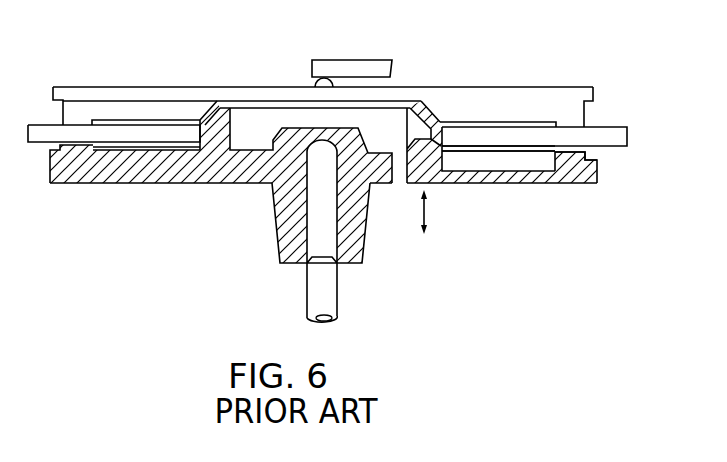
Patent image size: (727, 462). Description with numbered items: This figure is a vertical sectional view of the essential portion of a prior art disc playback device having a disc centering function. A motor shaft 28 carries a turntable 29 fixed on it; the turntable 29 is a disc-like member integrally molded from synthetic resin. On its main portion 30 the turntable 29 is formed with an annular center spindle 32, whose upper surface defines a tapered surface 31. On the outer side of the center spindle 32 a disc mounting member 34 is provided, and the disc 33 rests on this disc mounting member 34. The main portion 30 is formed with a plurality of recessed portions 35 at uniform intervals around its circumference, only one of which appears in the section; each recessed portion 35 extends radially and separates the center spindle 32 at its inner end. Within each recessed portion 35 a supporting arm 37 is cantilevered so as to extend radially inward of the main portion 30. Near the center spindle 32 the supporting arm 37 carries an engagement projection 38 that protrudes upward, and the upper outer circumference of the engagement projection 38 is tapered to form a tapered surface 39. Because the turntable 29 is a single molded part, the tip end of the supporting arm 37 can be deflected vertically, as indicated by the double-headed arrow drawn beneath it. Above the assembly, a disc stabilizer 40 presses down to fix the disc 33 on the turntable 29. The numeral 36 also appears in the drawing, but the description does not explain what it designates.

The motor shaft 28 is at (305, 278).
The turntable 29 is at (121, 165).
The main portion 30 is at (162, 155).
The tapered surface 31 is at (428, 117).
The center spindle 32 is at (407, 107).
The disc 33 is at (507, 162).
The disc mounting member 34 is at (572, 151).
The recessed portion 35 is at (518, 140).
The outer block 36 is at (573, 173).
The supporting arm 37 is at (507, 173).
The engagement projection 38 is at (452, 183).
The tapered surface 39 is at (477, 120).
The disc stabilizer 40 is at (215, 85).